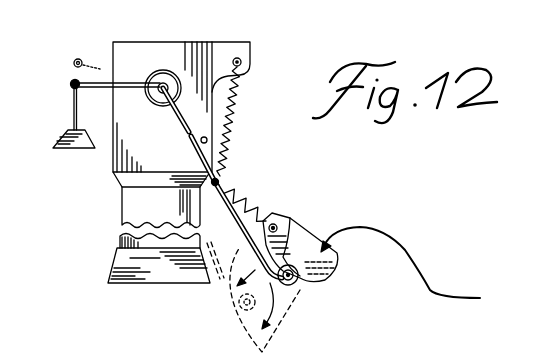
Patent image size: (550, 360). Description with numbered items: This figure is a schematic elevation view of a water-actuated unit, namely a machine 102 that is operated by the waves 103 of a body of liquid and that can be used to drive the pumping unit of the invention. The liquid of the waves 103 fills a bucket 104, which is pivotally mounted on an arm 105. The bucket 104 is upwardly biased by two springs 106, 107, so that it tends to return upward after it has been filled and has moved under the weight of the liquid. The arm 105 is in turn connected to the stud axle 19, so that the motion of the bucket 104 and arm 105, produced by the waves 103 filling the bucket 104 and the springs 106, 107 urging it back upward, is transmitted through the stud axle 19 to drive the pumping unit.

The stud axle 19 is at (152, 74).
The machine 102 is at (260, 48).
The waves 103 is at (410, 253).
The bucket 104 is at (287, 240).
The arm 105 is at (179, 118).
The spring 106 is at (245, 200).
The spring 107 is at (231, 127).